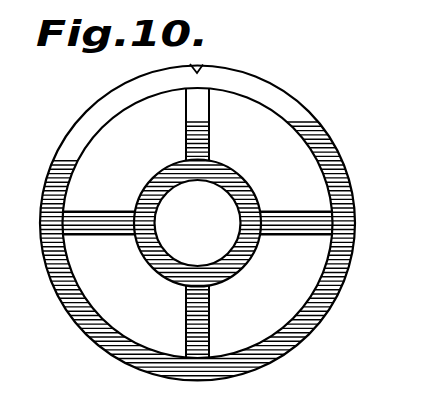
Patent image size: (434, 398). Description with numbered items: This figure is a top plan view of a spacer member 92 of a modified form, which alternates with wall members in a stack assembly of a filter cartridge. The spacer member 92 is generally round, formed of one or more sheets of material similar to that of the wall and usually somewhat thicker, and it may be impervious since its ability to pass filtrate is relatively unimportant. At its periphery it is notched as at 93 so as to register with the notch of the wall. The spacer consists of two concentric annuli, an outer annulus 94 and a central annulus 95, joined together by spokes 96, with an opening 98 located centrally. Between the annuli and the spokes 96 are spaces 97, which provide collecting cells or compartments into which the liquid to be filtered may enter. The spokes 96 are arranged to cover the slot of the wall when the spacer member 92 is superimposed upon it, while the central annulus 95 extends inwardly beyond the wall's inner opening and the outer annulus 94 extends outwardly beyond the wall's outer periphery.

The spacer member 92 is at (204, 206).
The notch 93 is at (198, 64).
The outer annulus 94 is at (280, 91).
The central annulus 95 is at (242, 183).
The spokes 96 is at (297, 202).
The spaces 97 is at (300, 292).
The opening 98 is at (173, 248).